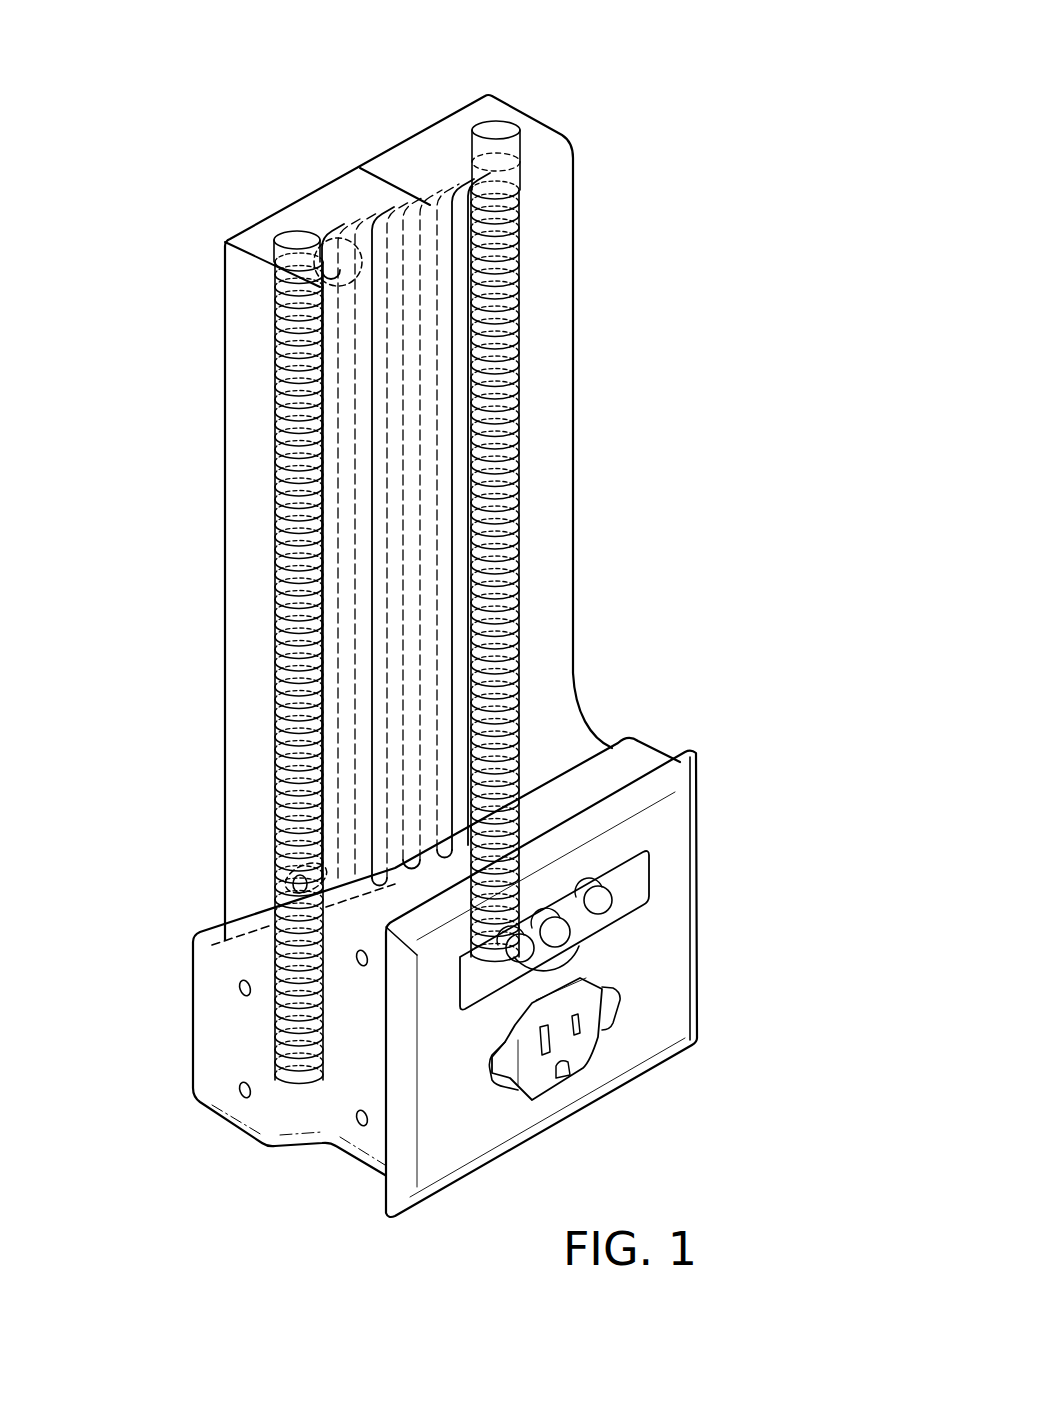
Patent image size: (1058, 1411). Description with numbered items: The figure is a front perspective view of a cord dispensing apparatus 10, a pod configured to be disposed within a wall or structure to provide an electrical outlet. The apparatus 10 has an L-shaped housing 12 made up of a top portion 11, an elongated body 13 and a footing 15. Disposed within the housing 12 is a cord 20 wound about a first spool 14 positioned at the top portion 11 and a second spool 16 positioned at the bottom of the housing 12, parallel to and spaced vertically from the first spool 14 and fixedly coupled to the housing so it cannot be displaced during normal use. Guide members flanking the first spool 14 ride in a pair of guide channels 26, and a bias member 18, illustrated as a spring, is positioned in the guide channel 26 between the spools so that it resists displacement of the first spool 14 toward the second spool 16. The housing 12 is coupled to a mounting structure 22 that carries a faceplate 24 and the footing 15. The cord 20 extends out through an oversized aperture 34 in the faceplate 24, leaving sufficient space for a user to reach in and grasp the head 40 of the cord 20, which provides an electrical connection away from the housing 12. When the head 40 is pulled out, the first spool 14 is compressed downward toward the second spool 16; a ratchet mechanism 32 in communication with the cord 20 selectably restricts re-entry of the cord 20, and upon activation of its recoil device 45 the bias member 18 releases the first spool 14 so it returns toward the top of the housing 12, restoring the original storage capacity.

The cord dispensing apparatus 10 is at (437, 634).
The top portion 11 is at (386, 547).
The housing 12 is at (560, 540).
The elongated body 13 is at (165, 243).
The first spool 14 is at (335, 240).
The footing 15 is at (163, 1138).
The second spool 16 is at (300, 878).
The bias member 18 is at (432, 602).
The cord 20 is at (403, 250).
The mounting structure 22 is at (205, 1040).
The faceplate 24 is at (673, 940).
The guide channel 26 is at (527, 337).
The ratchet mechanism 32 is at (627, 882).
The oversized aperture 34 is at (638, 1059).
The head 40 is at (582, 1052).
The recoil device 45 is at (585, 905).